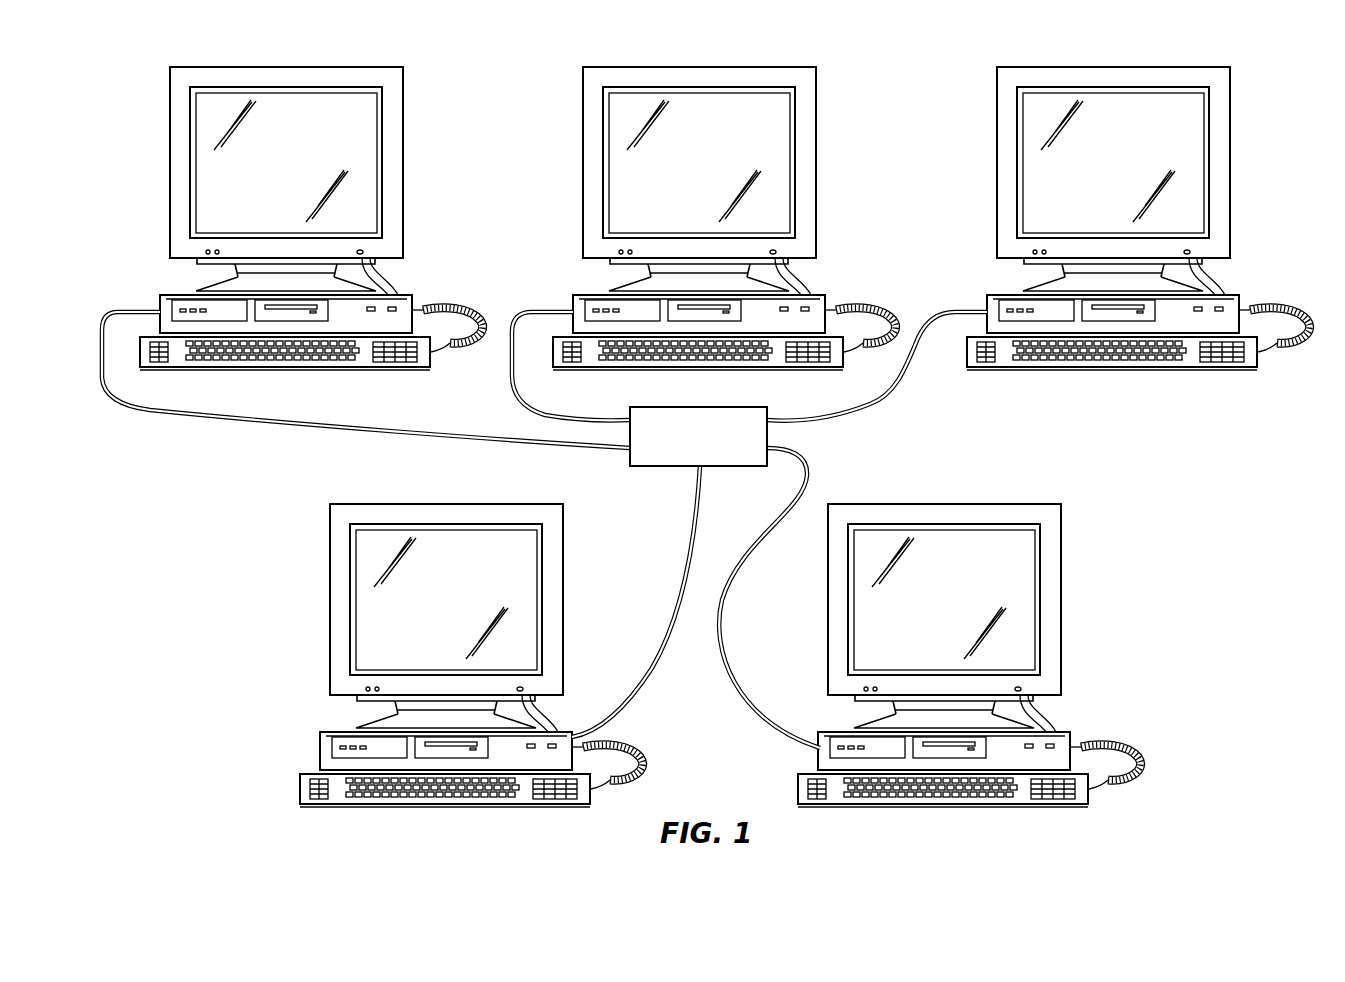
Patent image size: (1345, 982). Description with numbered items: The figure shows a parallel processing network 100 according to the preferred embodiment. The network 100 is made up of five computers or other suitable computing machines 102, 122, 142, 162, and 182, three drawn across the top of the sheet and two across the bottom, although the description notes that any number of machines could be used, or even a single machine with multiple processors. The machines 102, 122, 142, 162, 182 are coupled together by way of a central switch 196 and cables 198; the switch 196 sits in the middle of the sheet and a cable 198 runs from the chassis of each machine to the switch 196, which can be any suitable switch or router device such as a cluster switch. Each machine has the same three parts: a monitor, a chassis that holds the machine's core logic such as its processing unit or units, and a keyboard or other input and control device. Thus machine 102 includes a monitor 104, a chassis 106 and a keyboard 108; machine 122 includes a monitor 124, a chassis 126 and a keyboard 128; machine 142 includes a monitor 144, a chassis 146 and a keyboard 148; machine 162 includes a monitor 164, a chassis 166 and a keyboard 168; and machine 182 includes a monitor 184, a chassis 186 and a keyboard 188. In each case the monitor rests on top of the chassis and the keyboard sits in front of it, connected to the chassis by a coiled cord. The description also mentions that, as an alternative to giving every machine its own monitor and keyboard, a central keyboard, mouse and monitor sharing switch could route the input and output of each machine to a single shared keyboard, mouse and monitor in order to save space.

The parallel processing network 100 is at (707, 454).
The computer 102 is at (297, 238).
The monitor 104 is at (404, 149).
The chassis 106 is at (406, 294).
The keyboard 108 is at (397, 373).
The computer 122 is at (698, 238).
The monitor 124 is at (817, 130).
The chassis 126 is at (820, 295).
The keyboard 128 is at (785, 373).
The computer 142 is at (1108, 242).
The monitor 144 is at (1232, 130).
The chassis 146 is at (1238, 295).
The keyboard 148 is at (1228, 373).
The computer 162 is at (414, 673).
The monitor 164 is at (563, 576).
The chassis 166 is at (570, 735).
The keyboard 168 is at (570, 808).
The computer 182 is at (950, 673).
The monitor 184 is at (1063, 576).
The chassis 186 is at (1063, 732).
The keyboard 188 is at (1083, 810).
The switch 196 is at (642, 467).
The cables 198 is at (528, 442).